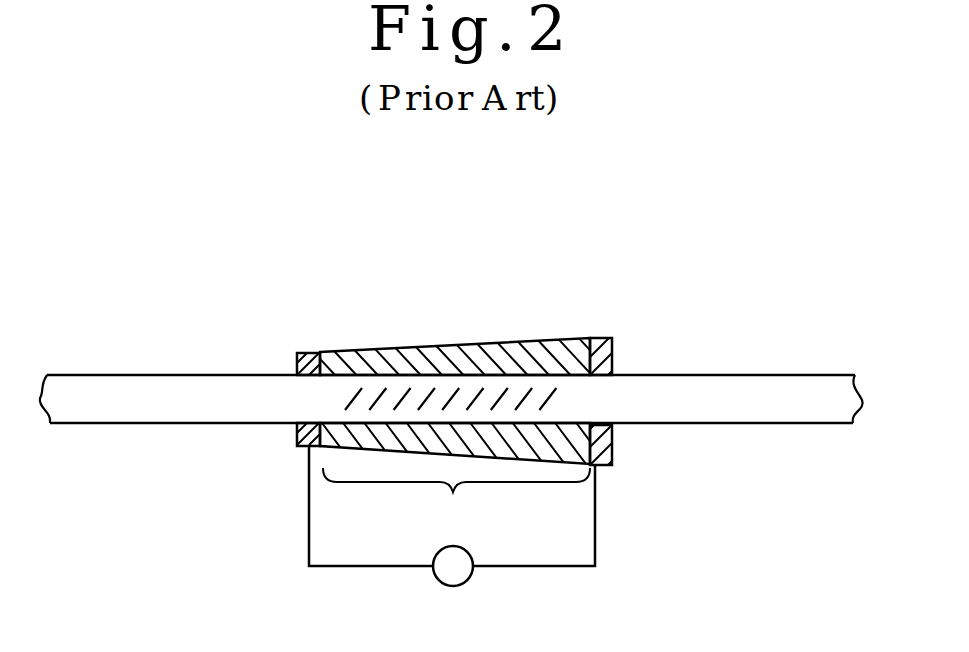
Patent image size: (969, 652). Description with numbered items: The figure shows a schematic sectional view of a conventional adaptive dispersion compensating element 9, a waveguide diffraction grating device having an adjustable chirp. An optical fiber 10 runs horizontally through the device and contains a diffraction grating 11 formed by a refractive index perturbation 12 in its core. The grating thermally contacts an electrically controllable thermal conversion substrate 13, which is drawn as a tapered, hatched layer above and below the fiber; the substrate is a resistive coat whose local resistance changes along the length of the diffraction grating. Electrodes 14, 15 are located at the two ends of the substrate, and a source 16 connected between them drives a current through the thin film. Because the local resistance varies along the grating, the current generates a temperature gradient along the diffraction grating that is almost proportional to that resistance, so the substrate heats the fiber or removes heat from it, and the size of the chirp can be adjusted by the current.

The prior art electro-optic fiber device 9 is at (761, 325).
The optical fiber 10 is at (142, 373).
The diffraction grating 11 is at (456, 501).
The refractive index perturbation 12 is at (550, 397).
The substrate 13 is at (425, 347).
The electrode 14 is at (297, 433).
The electrode 15 is at (602, 338).
The voltage source 16 is at (467, 582).